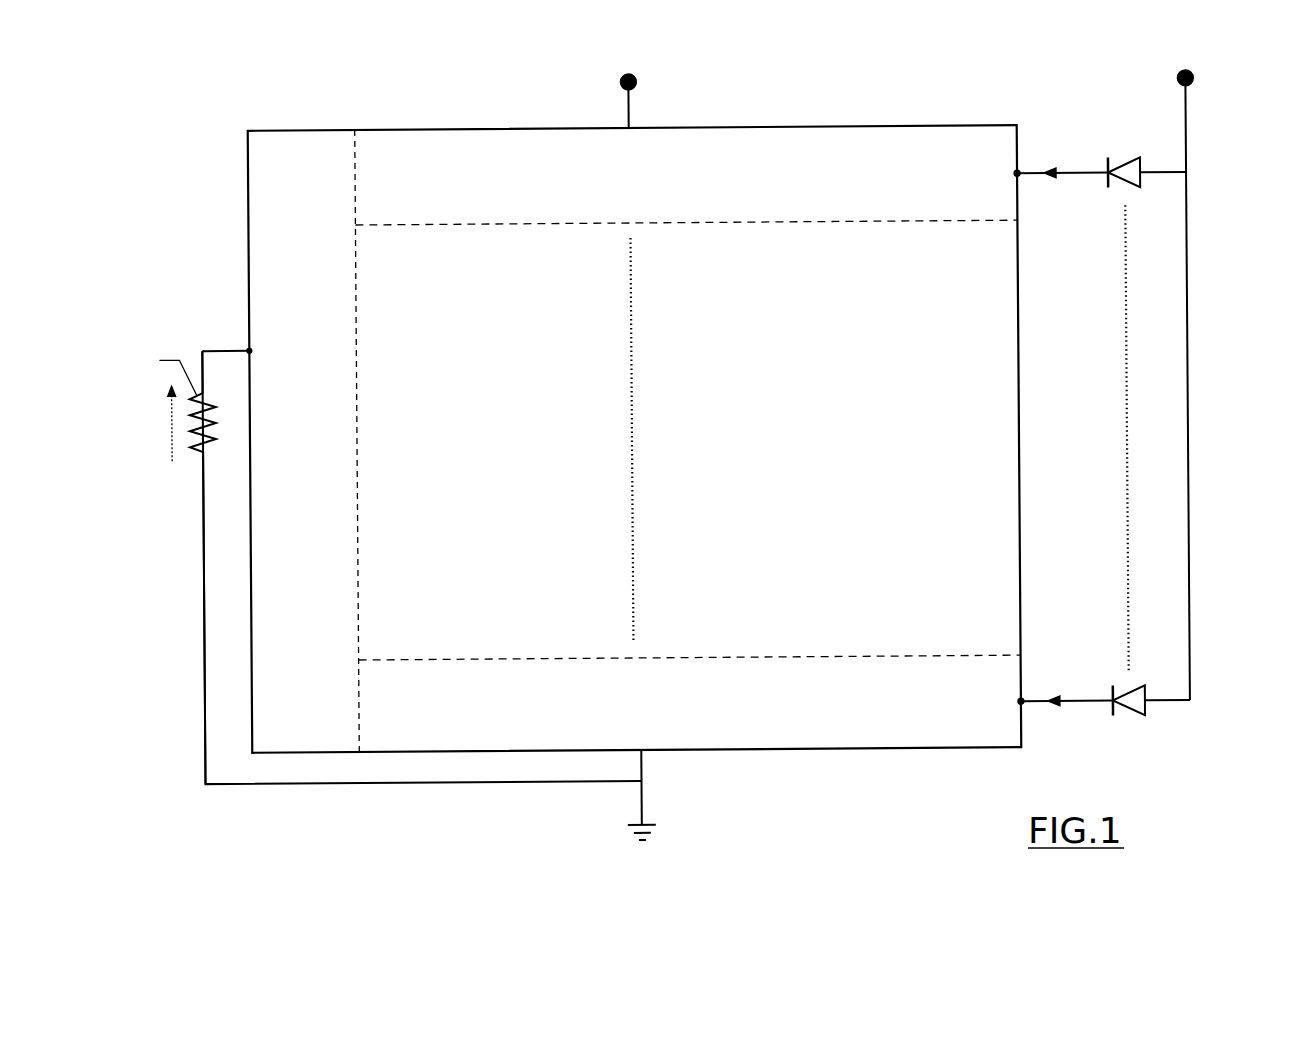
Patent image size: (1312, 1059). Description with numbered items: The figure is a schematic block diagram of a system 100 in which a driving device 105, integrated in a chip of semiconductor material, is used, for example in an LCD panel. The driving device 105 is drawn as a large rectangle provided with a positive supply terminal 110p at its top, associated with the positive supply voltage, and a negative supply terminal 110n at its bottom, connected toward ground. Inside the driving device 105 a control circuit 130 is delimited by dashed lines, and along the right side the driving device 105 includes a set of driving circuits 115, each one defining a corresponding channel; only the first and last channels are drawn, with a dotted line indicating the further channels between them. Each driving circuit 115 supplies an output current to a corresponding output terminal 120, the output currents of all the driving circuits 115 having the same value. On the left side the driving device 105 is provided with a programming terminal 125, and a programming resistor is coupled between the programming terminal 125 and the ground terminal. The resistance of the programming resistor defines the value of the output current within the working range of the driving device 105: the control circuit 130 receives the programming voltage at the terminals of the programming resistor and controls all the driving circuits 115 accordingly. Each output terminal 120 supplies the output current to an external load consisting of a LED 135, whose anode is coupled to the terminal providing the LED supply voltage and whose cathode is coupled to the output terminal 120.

The system 100 is at (243, 97).
The driving device 105 is at (247, 224).
The positive supply terminal 110p is at (630, 127).
The negative supply terminal 110n is at (642, 753).
The driving circuit 115 is at (1006, 199).
The output terminal 120 is at (1020, 178).
The programming terminal 125 is at (248, 347).
The control circuit 130 is at (342, 172).
The LED 135 is at (1125, 159).